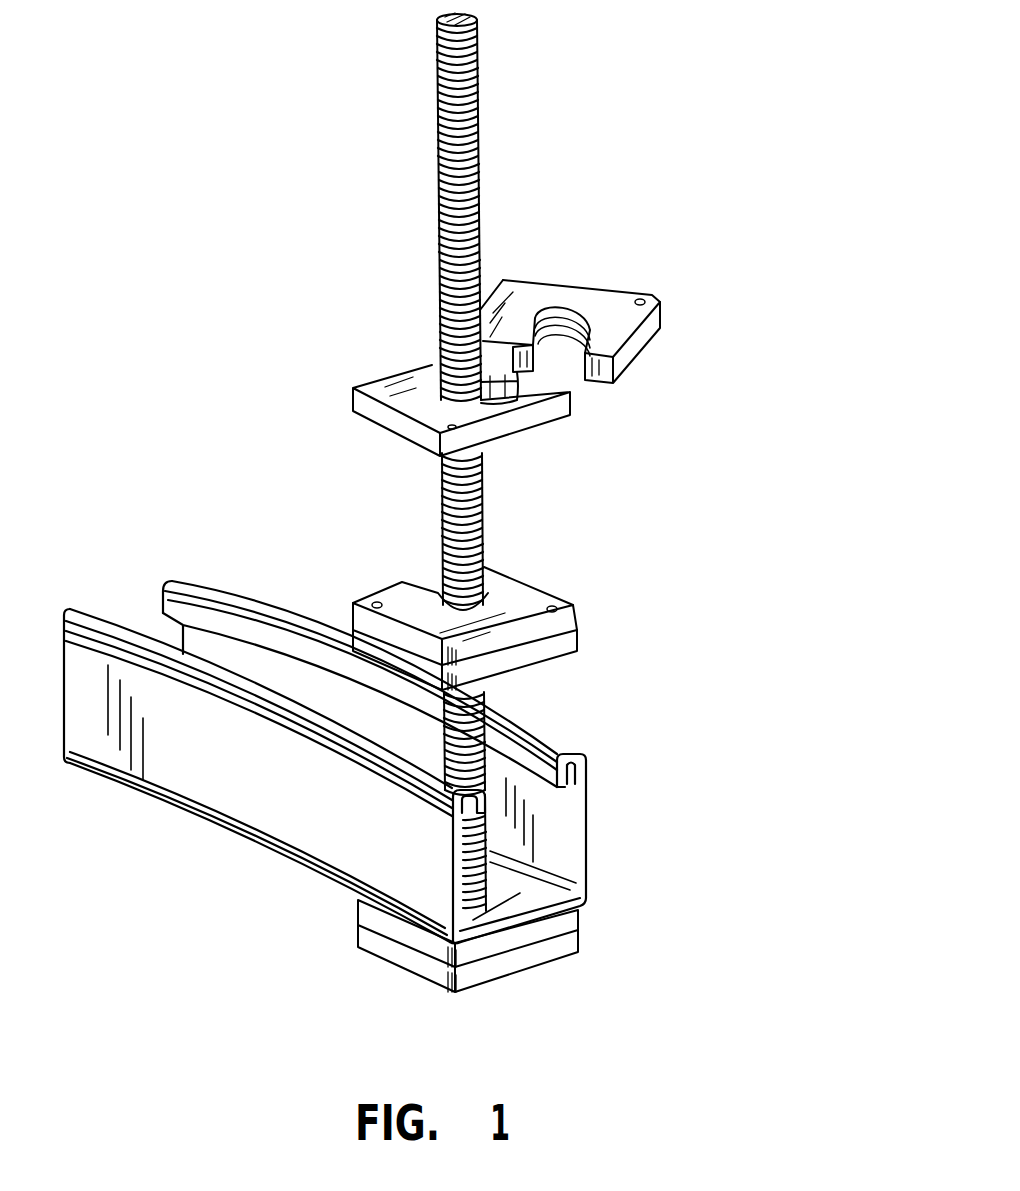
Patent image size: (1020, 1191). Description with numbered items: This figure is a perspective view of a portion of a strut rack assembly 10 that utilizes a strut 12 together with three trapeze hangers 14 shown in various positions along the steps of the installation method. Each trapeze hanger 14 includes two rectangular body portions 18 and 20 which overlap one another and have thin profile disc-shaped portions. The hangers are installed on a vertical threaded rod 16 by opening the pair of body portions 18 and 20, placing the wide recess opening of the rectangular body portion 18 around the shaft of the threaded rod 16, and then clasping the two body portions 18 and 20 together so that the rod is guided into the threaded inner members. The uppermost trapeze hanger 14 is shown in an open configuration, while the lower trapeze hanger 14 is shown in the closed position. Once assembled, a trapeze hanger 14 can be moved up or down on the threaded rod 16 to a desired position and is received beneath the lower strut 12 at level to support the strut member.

The strut rack assembly 10 is at (655, 738).
The strut 12 is at (570, 822).
The trapeze hanger 14 is at (655, 380).
The threaded rod 16 is at (490, 518).
The rectangular body portion 18 is at (600, 287).
The rectangular body portion 20 is at (357, 422).